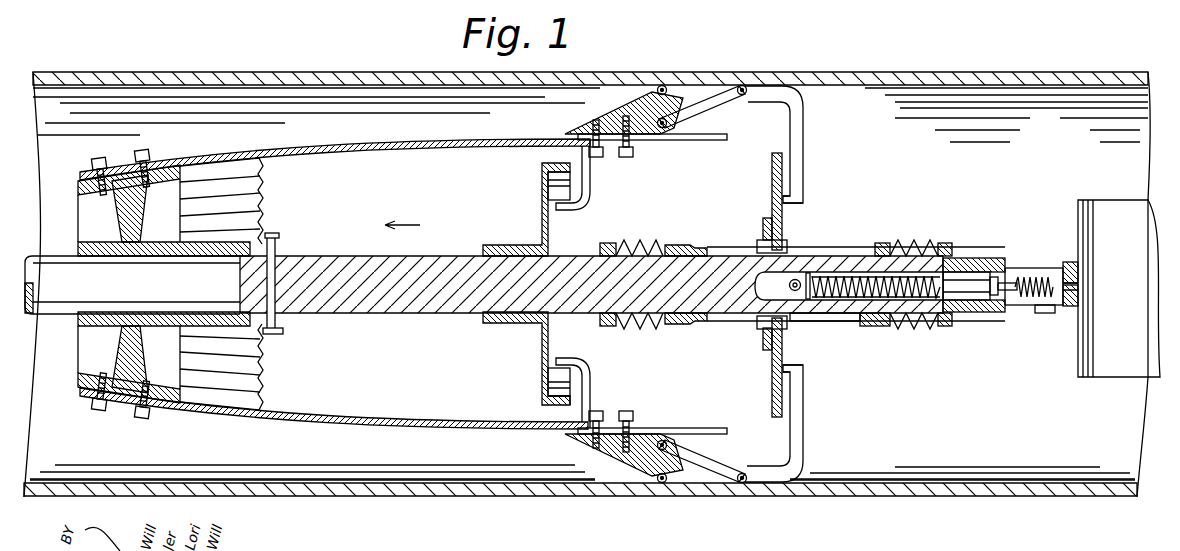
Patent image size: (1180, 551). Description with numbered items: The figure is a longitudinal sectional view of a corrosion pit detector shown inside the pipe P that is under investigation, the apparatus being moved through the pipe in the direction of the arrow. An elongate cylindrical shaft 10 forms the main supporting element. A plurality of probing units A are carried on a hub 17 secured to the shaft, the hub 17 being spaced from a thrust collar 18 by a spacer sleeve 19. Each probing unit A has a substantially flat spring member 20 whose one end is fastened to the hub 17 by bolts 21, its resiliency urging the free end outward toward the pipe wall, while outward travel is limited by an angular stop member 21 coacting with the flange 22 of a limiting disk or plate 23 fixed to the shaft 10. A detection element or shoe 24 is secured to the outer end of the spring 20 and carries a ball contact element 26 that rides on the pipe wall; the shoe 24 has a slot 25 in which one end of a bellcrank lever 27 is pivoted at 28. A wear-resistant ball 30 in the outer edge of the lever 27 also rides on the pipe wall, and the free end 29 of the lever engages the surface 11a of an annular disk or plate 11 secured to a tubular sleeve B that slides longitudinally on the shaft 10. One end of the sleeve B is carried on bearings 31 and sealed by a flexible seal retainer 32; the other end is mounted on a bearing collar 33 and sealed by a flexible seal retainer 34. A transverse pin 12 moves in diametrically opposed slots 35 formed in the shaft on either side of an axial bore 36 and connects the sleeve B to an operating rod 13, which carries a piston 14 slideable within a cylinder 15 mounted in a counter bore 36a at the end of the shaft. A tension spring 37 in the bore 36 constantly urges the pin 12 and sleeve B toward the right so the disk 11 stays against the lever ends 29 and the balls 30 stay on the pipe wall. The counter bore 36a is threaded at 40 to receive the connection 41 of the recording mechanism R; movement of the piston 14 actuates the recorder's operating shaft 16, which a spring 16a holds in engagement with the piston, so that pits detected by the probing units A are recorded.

The shaft 10 is at (383, 315).
The annular disk or plate 11 is at (772, 393).
The surface of annular disk 11a is at (776, 212).
The transverse pin 12 is at (797, 281).
The operating rod 13 is at (955, 268).
The piston 14 is at (992, 276).
The cylinder 15 is at (960, 325).
The operating shaft 16 is at (1035, 268).
The spring 16a is at (1063, 273).
The hub 17 is at (100, 326).
The thrust collar 18 is at (277, 323).
The spacer sleeve 19 is at (262, 342).
The spring member 20 is at (330, 420).
The bolts / angular stop member 21 is at (112, 404).
The flange 22 is at (542, 408).
The limiting disk or plate 23 is at (542, 350).
The detection element or shoe 24 is at (605, 118).
The slot 25 is at (700, 140).
The ball contact element 26 is at (664, 86).
The bellcrank lever 27 is at (788, 98).
The pivot 28 is at (663, 128).
The free end of bellcrank lever 29 is at (803, 192).
The contact element or ball 30 is at (742, 86).
The bearings 31 is at (680, 252).
The flexible seal retainer 32 is at (640, 250).
The bearing collar 33 is at (882, 250).
The flexible seal retainer 34 is at (912, 248).
The slots 35 is at (765, 250).
The axial bore 36 is at (862, 328).
The counter bore 36a is at (988, 327).
The spring 37 is at (892, 330).
The threaded end 40 is at (1040, 316).
The connection 41 is at (1070, 262).
The probing units A is at (620, 96).
The tubular sleeve B is at (820, 349).
The pipe P is at (975, 497).
The recording mechanism R is at (1112, 365).